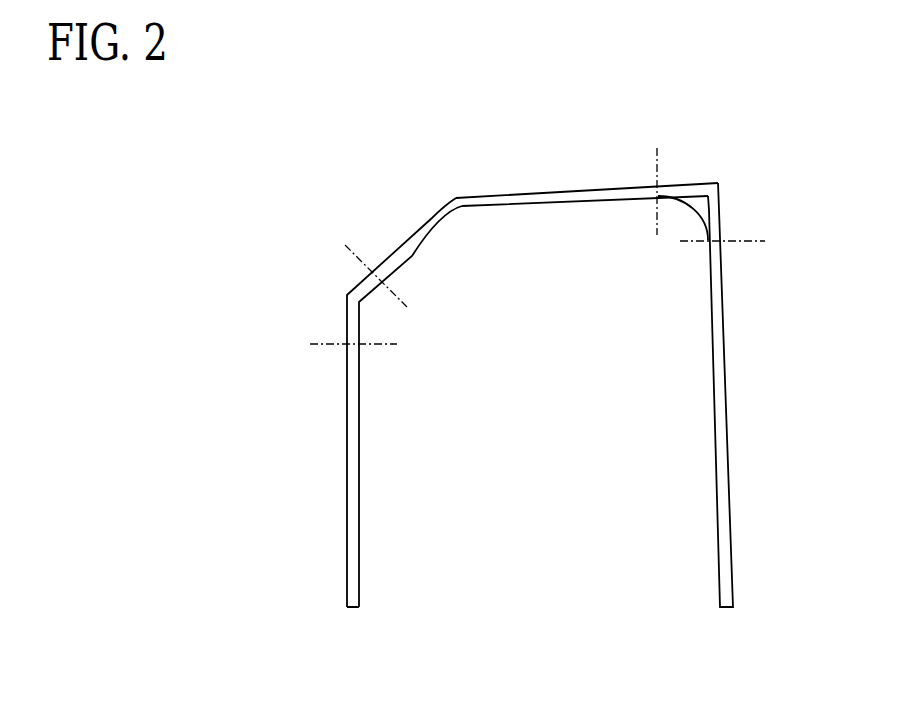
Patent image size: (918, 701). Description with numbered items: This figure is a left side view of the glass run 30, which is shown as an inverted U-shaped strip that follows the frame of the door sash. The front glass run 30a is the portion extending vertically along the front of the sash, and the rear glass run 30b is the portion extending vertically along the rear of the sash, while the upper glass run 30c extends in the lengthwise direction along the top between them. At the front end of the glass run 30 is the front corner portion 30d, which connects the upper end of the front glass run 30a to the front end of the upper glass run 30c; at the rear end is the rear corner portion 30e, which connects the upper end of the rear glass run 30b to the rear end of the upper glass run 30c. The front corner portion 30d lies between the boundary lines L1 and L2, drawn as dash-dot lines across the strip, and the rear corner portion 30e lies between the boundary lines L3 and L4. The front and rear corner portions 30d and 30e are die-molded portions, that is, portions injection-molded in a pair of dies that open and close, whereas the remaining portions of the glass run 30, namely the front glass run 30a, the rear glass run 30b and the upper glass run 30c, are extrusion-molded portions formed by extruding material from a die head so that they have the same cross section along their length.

The glass run 30 is at (580, 188).
The front glass run 30a is at (347, 482).
The rear glass run 30b is at (727, 460).
The upper glass run 30c is at (505, 190).
The front corner portion 30d is at (347, 318).
The rear corner portion 30e is at (720, 197).
The boundary line L1 is at (337, 345).
The boundary line L2 is at (362, 252).
The boundary line L3 is at (660, 160).
The boundary line L4 is at (733, 243).